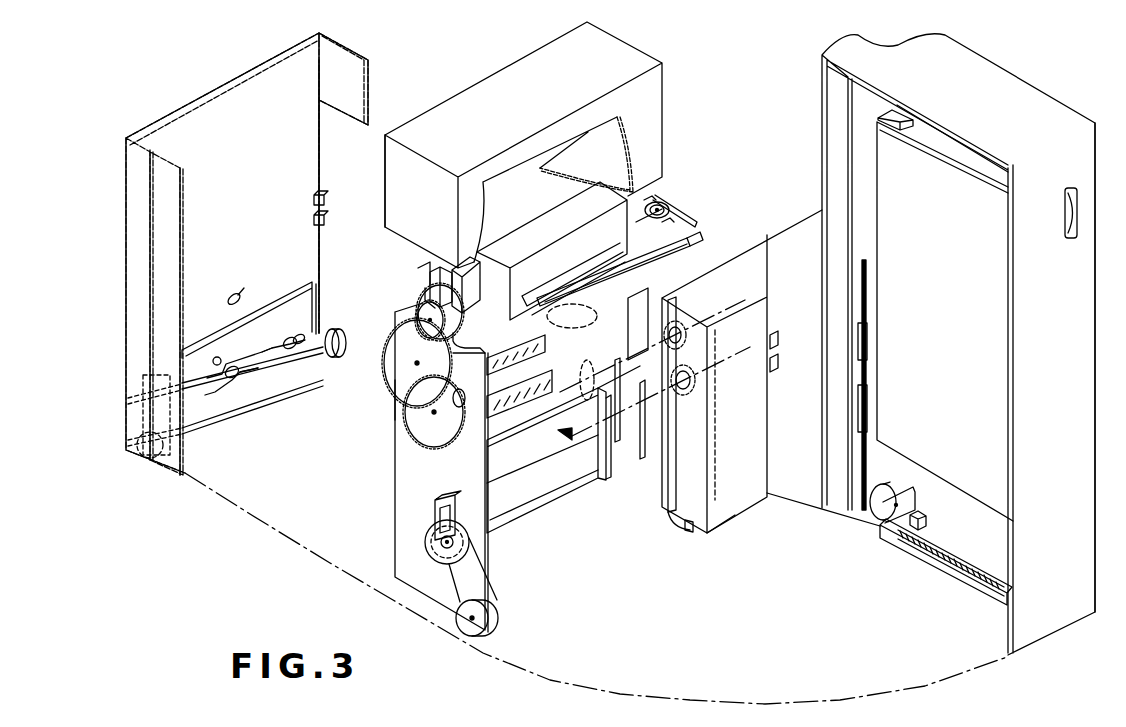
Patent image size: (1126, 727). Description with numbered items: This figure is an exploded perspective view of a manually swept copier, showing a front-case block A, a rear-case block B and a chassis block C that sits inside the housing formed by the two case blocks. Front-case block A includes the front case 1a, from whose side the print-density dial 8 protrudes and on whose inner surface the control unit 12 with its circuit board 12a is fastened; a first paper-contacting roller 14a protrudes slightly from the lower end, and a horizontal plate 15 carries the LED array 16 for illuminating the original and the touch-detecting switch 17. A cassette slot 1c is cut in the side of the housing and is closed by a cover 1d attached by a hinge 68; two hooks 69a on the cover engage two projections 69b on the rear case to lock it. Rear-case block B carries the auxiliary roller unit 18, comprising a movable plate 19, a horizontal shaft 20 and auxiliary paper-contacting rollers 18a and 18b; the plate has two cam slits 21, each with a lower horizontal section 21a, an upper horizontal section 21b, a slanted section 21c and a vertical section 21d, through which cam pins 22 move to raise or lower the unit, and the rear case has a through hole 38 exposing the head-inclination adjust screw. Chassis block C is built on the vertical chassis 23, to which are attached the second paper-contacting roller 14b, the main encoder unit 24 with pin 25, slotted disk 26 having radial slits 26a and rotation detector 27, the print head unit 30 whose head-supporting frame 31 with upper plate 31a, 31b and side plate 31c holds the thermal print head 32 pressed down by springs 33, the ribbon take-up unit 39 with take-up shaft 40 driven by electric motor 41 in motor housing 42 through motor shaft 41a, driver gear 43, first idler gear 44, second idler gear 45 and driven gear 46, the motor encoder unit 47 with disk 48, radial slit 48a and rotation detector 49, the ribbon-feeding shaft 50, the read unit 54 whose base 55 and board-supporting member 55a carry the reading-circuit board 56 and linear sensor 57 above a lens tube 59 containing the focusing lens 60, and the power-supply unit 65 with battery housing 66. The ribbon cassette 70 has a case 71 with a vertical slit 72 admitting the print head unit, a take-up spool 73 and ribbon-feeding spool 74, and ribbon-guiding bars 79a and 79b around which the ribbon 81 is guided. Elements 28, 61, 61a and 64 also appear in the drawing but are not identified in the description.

The front-case block A is at (1067, 102).
The rear-case block B is at (199, 92).
The chassis block C is at (460, 96).
The front case 1a is at (1088, 310).
The cassette slot 1c is at (341, 156).
The cover 1d is at (805, 502).
The print-density dial 8 is at (1080, 216).
The control unit 12 is at (872, 180).
The circuit board 12a is at (960, 182).
The first paper-contacting roller 14a is at (876, 521).
The second paper-contacting roller 14b is at (470, 634).
The horizontal plate 15 is at (912, 550).
The LED array 16 is at (946, 570).
The touch-detecting switch 17 is at (925, 516).
The auxiliary roller unit 18 is at (282, 388).
The auxiliary paper-contacting roller 18a is at (333, 331).
The auxiliary paper-contacting roller 18b is at (148, 456).
The movable plate 19 is at (287, 306).
The horizontal shaft 20 is at (250, 392).
The cam slit 21 is at (270, 358).
The lower horizontal section 21a is at (300, 333).
The upper horizontal section 21b is at (246, 358).
The slanted section 21c is at (276, 348).
The vertical section 21d is at (216, 356).
The cam pin 22 is at (298, 348).
The chassis 23 is at (396, 502).
The main encoder unit 24 is at (427, 529).
The pin 25 is at (440, 548).
The disk 26 is at (450, 560).
The slit 26a is at (470, 528).
The rotation detector 27 is at (447, 498).
The belt 28 is at (480, 583).
The print head unit 30 is at (565, 518).
The head-supporting frame 31 is at (571, 390).
The upper plate 31a is at (593, 392).
The upper plate 31b is at (527, 455).
The side plate 31c is at (612, 468).
The thermal print head 32 is at (580, 503).
The spring 33 is at (571, 438).
The through hole 38 is at (246, 280).
The ribbon take-up unit 39 is at (397, 398).
The ribbon take-up shaft 40 is at (508, 358).
The electric motor 41 is at (492, 272).
The motor shaft 41a is at (416, 303).
The motor housing 42 is at (540, 220).
The driver gear 43 is at (418, 300).
The first idler gear 44 is at (395, 346).
The second idler gear 45 is at (420, 434).
The driven gear 46 is at (461, 390).
The motor encoder unit 47 is at (416, 275).
The disk 48 is at (422, 292).
The radial slit 48a is at (470, 335).
The rotation detector 49 is at (442, 262).
The ribbon-feeding shaft 50 is at (523, 394).
The read unit 54 is at (648, 262).
The base 55 is at (625, 263).
The board-supporting member 55a is at (680, 234).
The reading-circuit board 56 is at (570, 248).
The linear sensor 57 is at (598, 275).
The lens tube 59 is at (586, 306).
The focusing lens 60 is at (605, 305).
The knob 61 is at (665, 205).
The knob tabs 61a is at (652, 190).
The link 64 is at (648, 219).
The power-supply unit 65 is at (668, 76).
The battery housing 66 is at (655, 118).
The hinge 68 is at (868, 376).
The hook 69a is at (780, 342).
The projection 69b is at (326, 200).
The ribbon cassette 70 is at (737, 250).
The case 71 is at (735, 507).
The vertical slit 72 is at (667, 492).
The take-up spool 73 is at (682, 324).
The ribbon-feeding spool 74 is at (695, 378).
The ribbon-guiding bar 79a is at (722, 506).
The ribbon-guiding bar 79b is at (676, 522).
The ribbon 81 is at (688, 533).